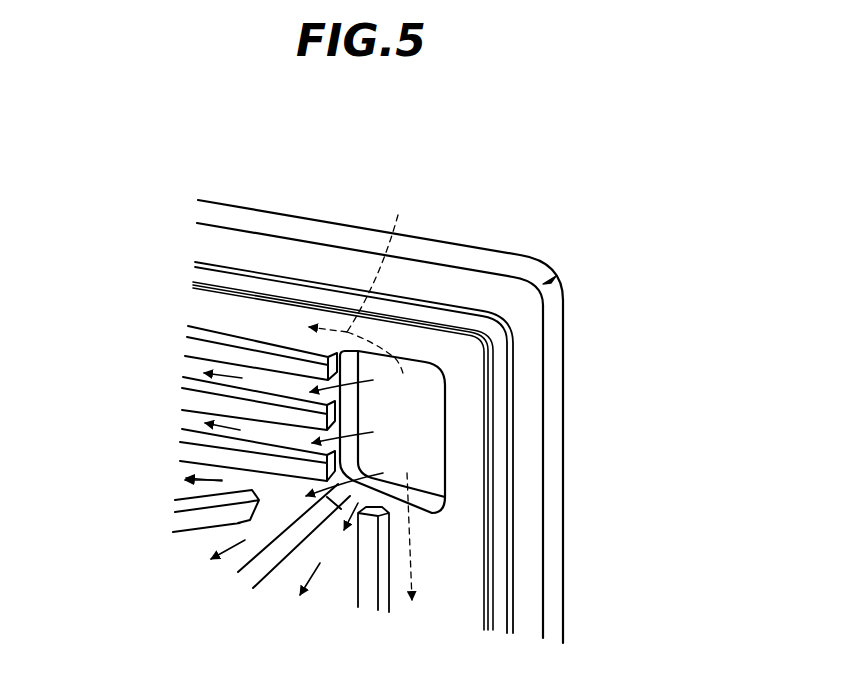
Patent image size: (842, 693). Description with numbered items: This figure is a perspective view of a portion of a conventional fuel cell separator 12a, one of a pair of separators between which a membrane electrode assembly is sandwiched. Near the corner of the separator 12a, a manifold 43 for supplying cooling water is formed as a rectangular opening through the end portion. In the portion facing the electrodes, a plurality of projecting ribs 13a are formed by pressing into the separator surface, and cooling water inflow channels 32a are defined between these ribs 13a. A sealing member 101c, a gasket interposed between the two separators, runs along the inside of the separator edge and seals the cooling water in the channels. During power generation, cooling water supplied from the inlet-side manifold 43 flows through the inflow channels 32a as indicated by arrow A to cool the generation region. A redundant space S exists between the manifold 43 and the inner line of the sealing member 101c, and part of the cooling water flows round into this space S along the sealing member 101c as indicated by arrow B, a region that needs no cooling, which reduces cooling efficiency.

The separator 12a is at (557, 317).
The sealing member 101c is at (497, 413).
The projecting ribs 13a is at (205, 398).
The cooling water inflow channels 32a is at (196, 420).
The manifold 43 is at (417, 503).
The arrow A is at (228, 373).
The arrow B is at (360, 397).
The redundant space S is at (245, 307).